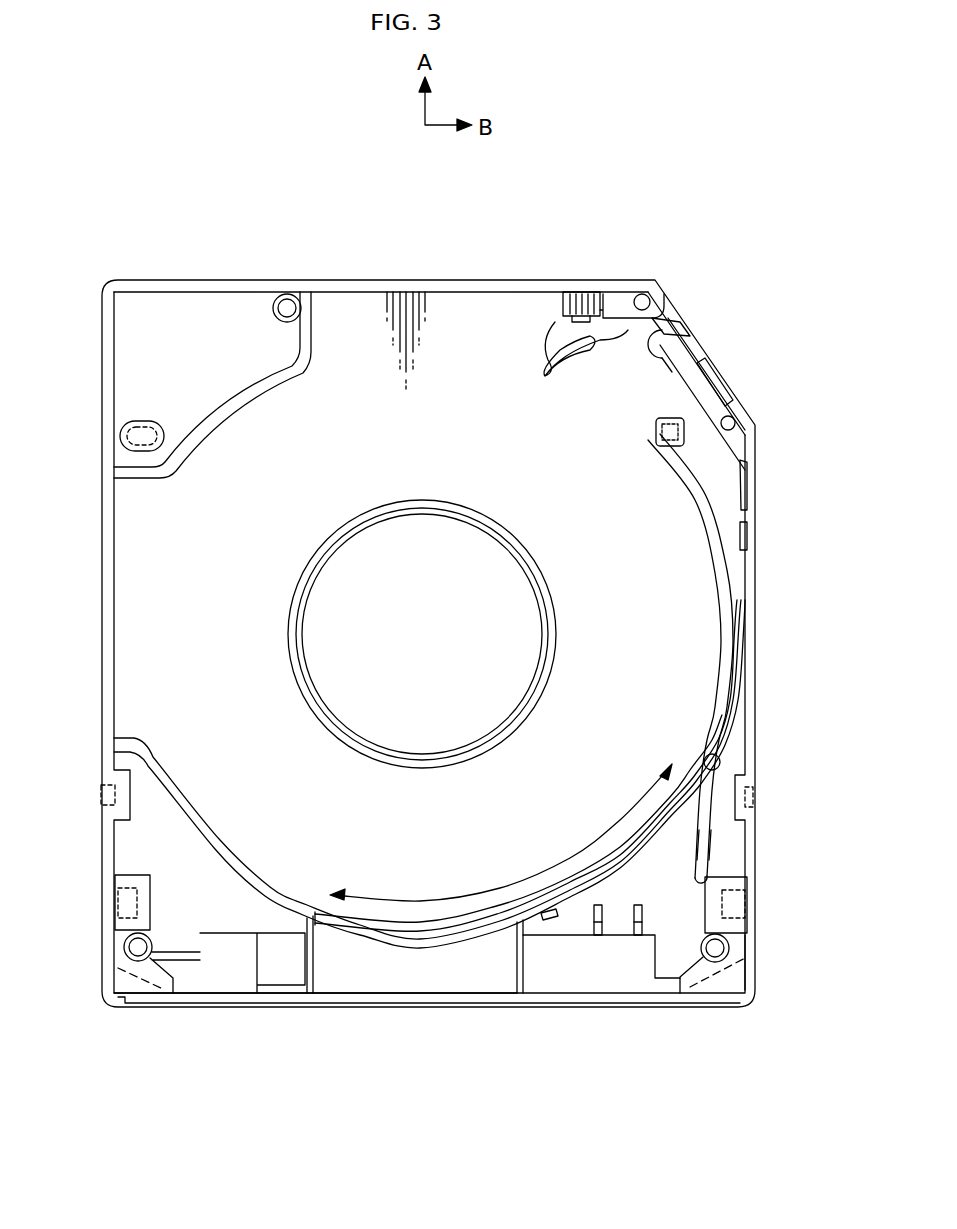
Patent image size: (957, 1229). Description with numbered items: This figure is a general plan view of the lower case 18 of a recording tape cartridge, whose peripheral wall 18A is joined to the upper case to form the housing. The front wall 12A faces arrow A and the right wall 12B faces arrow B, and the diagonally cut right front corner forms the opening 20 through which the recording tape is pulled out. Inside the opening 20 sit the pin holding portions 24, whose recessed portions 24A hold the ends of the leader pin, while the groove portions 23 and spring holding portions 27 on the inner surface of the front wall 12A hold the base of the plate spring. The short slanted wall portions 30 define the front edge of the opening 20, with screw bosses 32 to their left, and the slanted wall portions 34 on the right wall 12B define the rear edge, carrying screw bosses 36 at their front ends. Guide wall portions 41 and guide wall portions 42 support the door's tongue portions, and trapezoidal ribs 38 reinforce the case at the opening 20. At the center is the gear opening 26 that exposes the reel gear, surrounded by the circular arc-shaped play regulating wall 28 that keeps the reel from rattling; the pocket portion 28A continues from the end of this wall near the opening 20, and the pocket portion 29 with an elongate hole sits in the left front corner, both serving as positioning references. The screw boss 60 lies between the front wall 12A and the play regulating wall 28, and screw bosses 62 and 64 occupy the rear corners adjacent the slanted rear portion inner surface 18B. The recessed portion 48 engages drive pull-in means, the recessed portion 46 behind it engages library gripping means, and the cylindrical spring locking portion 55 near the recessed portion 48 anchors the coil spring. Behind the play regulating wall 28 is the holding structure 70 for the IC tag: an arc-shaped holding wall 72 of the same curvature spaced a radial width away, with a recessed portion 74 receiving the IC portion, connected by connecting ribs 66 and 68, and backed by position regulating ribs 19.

The lower case 18 is at (453, 206).
The front wall 12A is at (362, 280).
The right wall 12B is at (757, 632).
The position regulating ribs 19 is at (598, 938).
The peripheral wall 18A is at (248, 1006).
The rear portion inner surface 18B is at (572, 990).
The opening 20 is at (712, 340).
The groove portions 23 is at (600, 290).
The pin holding portions 24 is at (648, 352).
The recessed portions 24A is at (662, 360).
The gear opening 26 is at (414, 512).
The spring holding portions 27 is at (580, 354).
The play regulating wall 28 is at (198, 452).
The pocket portion 28A is at (654, 430).
The pocket portion 29 is at (143, 418).
The slanted wall portions 30 is at (664, 300).
The screw bosses 32 is at (641, 292).
The slanted wall portions 34 is at (712, 482).
The screw bosses 36 is at (736, 422).
The ribs 38 is at (722, 378).
The guide wall portions 41 is at (678, 326).
The guide wall portions 42 is at (722, 846).
The recessed portion 46 is at (115, 900).
The recessed portion 48 is at (100, 796).
The spring locking portion 55 is at (704, 758).
The screw boss 60 is at (282, 298).
The screw boss 62 is at (124, 948).
The screw boss 64 is at (728, 950).
The connecting rib 66 is at (310, 995).
The connecting rib 68 is at (520, 996).
The holding structure 70 is at (398, 950).
The holding wall 72 is at (430, 950).
The recessed portion 74 is at (548, 900).